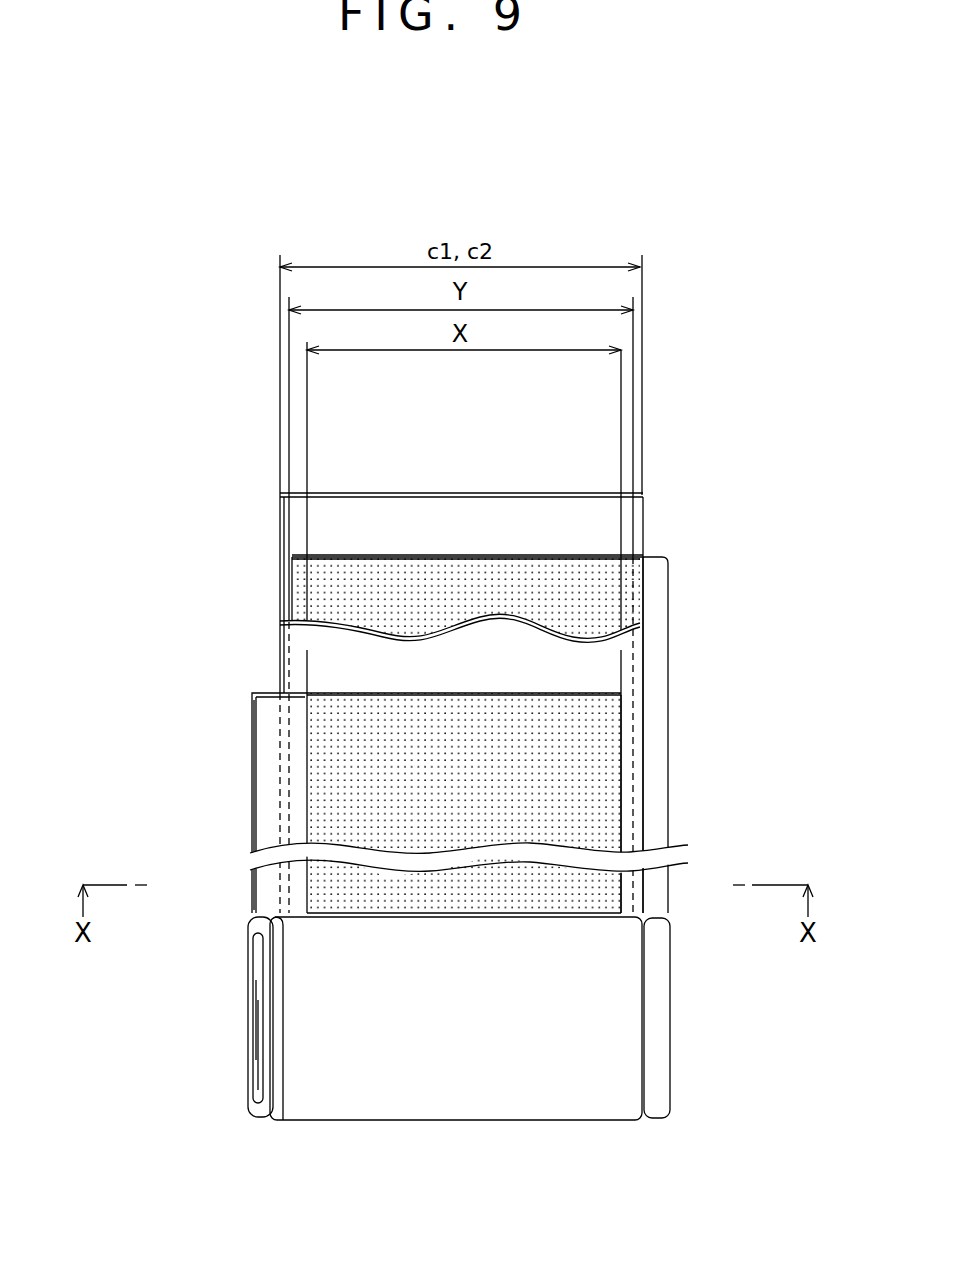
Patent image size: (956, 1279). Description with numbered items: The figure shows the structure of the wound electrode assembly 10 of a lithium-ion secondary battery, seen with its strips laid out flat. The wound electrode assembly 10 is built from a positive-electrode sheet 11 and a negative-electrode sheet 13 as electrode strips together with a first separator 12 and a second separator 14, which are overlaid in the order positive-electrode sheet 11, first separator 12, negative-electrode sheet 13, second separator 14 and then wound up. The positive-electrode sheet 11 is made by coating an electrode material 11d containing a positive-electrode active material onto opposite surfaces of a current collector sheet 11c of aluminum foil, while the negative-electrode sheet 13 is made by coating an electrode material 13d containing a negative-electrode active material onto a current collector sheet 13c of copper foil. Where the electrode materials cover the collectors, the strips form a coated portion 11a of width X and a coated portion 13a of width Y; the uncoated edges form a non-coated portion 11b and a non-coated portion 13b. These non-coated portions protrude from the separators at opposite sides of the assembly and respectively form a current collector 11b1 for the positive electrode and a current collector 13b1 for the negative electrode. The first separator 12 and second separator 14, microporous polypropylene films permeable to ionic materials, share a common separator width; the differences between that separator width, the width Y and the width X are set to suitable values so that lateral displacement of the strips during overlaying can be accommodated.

The wound electrode assembly 10 is at (495, 1097).
The positive-electrode sheet 11 is at (250, 748).
The coated portion 11a is at (355, 796).
The non-coated portion 11b is at (268, 830).
The current collector 11b1 is at (275, 1023).
The current collector sheet 11c is at (438, 693).
The electrode material 11d is at (610, 762).
The first separator 12 is at (297, 665).
The negative-electrode sheet 13 is at (676, 566).
The coated portion 13a is at (590, 570).
The non-coated portion 13b is at (655, 615).
The current collector 13b1 is at (660, 1023).
The current collector sheet 13c is at (450, 556).
The electrode material 13d is at (318, 597).
The second separator 14 is at (297, 523).